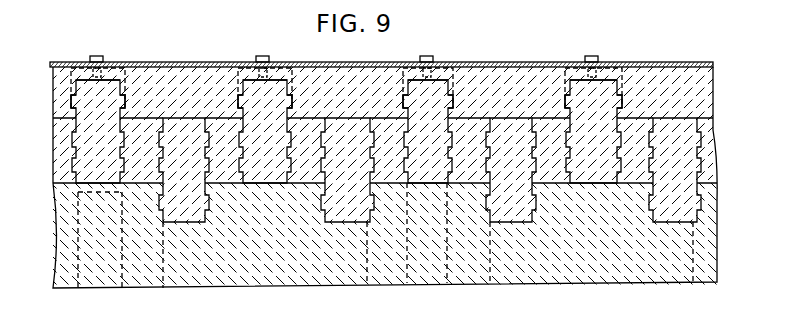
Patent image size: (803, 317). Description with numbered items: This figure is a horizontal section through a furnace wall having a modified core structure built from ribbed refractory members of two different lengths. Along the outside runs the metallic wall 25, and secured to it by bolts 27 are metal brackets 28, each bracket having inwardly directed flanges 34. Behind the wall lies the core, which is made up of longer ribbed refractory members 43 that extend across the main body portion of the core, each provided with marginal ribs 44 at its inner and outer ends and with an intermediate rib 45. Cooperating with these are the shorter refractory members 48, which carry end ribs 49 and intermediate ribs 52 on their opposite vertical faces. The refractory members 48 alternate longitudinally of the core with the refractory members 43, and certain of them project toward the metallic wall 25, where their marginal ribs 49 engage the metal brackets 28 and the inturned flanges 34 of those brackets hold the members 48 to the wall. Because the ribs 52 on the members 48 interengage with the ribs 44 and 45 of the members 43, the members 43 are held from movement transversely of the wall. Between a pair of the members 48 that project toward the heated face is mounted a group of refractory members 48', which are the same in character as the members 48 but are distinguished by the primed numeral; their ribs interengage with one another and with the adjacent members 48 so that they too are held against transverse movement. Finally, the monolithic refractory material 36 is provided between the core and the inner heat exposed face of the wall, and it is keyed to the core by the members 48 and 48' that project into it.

The metallic wall 25 is at (497, 62).
The bolt 27 is at (97, 55).
The metal bracket 28 is at (126, 66).
The inwardly directed flange 34 is at (72, 99).
The monolithic refractory material 36 is at (266, 280).
The ribbed refractory member 43 is at (203, 164).
The marginal rib 44 is at (241, 128).
The intermediate rib 45 is at (118, 164).
The refractory member 48 is at (406, 162).
The refractory member 48' is at (356, 235).
The end flange or rib 49 is at (74, 88).
The intermediate rib 52 is at (293, 152).